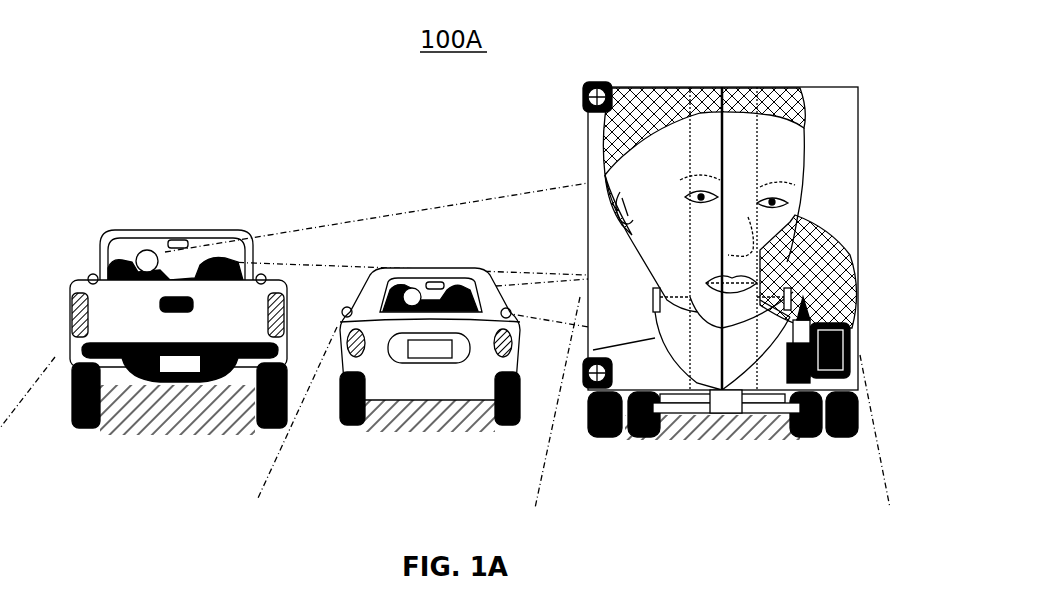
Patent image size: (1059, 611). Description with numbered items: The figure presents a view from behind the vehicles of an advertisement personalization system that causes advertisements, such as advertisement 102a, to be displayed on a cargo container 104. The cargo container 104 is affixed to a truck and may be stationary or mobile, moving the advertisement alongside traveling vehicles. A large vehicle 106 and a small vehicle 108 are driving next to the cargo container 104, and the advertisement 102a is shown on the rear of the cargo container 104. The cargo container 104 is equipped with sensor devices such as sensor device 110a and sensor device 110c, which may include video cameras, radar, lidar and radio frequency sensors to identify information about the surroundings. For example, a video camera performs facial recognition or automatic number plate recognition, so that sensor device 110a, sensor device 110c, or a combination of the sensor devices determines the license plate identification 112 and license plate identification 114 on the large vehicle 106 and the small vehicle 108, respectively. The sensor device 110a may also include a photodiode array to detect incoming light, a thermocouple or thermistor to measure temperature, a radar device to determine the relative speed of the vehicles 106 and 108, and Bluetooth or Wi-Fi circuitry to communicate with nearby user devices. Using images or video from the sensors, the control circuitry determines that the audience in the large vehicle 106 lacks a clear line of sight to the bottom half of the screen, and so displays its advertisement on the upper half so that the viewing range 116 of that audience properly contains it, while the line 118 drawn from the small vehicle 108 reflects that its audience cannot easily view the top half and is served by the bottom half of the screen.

The advertisement 102a is at (847, 198).
The cargo container 104 is at (858, 112).
The large vehicle 106 is at (100, 250).
The small vehicle 108 is at (370, 285).
The sensor device 110a is at (583, 96).
The sensor device 110c is at (577, 392).
The license plate identification 112 is at (210, 385).
The license plate identification 114 is at (455, 357).
The viewing range 116 is at (497, 195).
The camera field of view line 118 is at (537, 276).